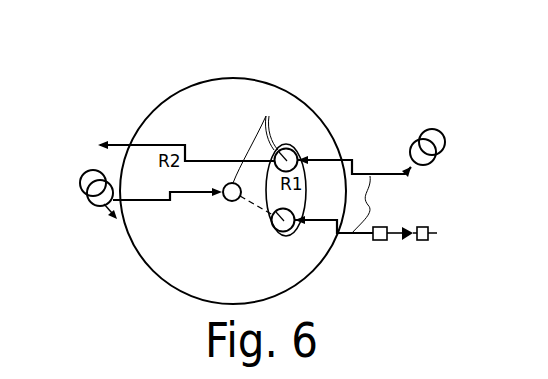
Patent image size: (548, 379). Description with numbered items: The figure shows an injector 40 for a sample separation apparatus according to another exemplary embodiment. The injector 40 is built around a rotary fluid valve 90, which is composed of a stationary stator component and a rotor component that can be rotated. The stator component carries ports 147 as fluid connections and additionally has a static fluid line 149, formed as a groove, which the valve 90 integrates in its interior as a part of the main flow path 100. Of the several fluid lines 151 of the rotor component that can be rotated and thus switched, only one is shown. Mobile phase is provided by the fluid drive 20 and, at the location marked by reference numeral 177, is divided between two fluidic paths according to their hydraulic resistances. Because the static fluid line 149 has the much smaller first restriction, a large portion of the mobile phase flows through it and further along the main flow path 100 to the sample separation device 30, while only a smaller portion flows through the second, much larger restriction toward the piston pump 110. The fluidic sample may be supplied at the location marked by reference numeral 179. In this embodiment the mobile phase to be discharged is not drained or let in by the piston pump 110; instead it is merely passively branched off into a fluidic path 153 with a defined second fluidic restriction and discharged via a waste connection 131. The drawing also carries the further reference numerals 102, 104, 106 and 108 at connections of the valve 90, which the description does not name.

The fluid drive 20 is at (431, 129).
The sample separation device 30 is at (423, 226).
The injector 40 is at (160, 90).
The rotary fluid valve 90 is at (133, 250).
The main flow path 100 is at (300, 198).
The inlet port 102 is at (212, 204).
The outlet passage 104 is at (174, 130).
The second chamber port 106 is at (290, 232).
The first chamber port 108 is at (294, 151).
The piston pump 110 is at (92, 171).
The waste connection 131 is at (104, 140).
The ports 147 is at (257, 140).
The static fluid line 149 is at (300, 198).
The fluid lines 151 is at (262, 212).
The fluidic path 153 is at (203, 160).
The division point 177 is at (299, 158).
The sample supply location 179 is at (300, 230).